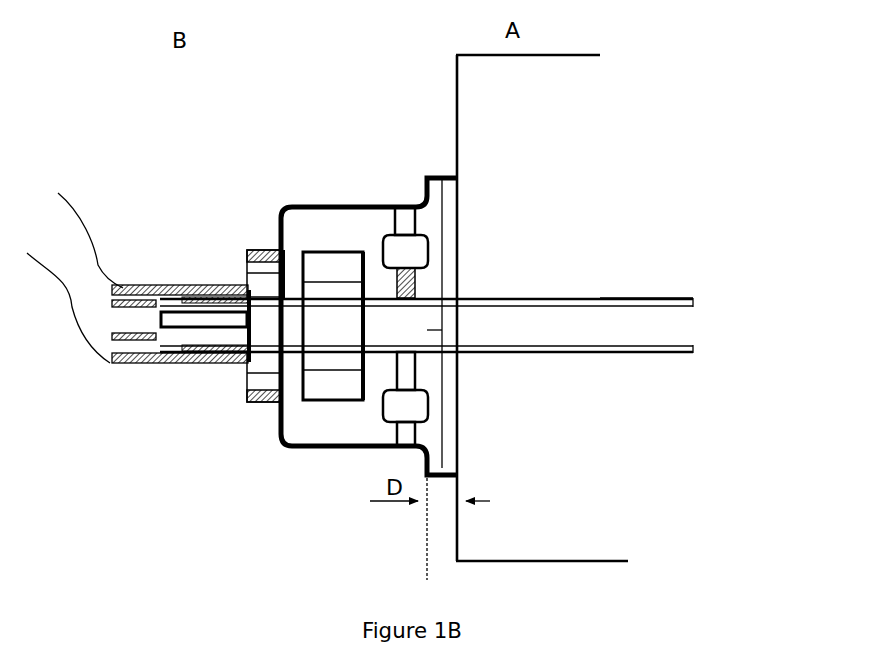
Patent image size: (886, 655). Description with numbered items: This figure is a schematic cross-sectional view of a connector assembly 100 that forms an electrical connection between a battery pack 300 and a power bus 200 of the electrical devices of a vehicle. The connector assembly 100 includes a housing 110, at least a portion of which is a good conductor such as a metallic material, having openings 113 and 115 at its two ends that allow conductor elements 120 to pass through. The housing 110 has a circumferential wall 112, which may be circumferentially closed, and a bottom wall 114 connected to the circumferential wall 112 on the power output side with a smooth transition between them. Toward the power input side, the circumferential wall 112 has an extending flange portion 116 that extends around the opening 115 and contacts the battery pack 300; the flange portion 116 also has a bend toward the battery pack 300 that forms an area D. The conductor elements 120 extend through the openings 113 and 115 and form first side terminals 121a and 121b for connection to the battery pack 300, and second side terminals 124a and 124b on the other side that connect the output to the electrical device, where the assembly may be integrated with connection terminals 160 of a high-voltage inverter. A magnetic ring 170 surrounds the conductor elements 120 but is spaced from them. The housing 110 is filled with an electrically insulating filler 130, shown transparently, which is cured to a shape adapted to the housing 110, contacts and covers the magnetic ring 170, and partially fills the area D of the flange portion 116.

The connector assembly 100 is at (158, 104).
The housing 110 is at (294, 198).
The circumferential wall 112 is at (342, 447).
The opening 113 is at (285, 280).
The bottom wall 114 is at (278, 424).
The opening 115 is at (425, 335).
The flange portion 116 is at (440, 468).
The conductor elements 120 is at (600, 298).
The first side terminal 121a is at (693, 300).
The first side terminal 121b is at (693, 352).
The second side terminal 124a is at (185, 297).
The second side terminal 124b is at (183, 348).
The insulating filler 130 is at (442, 243).
The connection terminals 160 is at (193, 290).
The magnetic ring 170 is at (335, 283).
The power bus 200 is at (53, 220).
The battery pack 300 is at (457, 133).